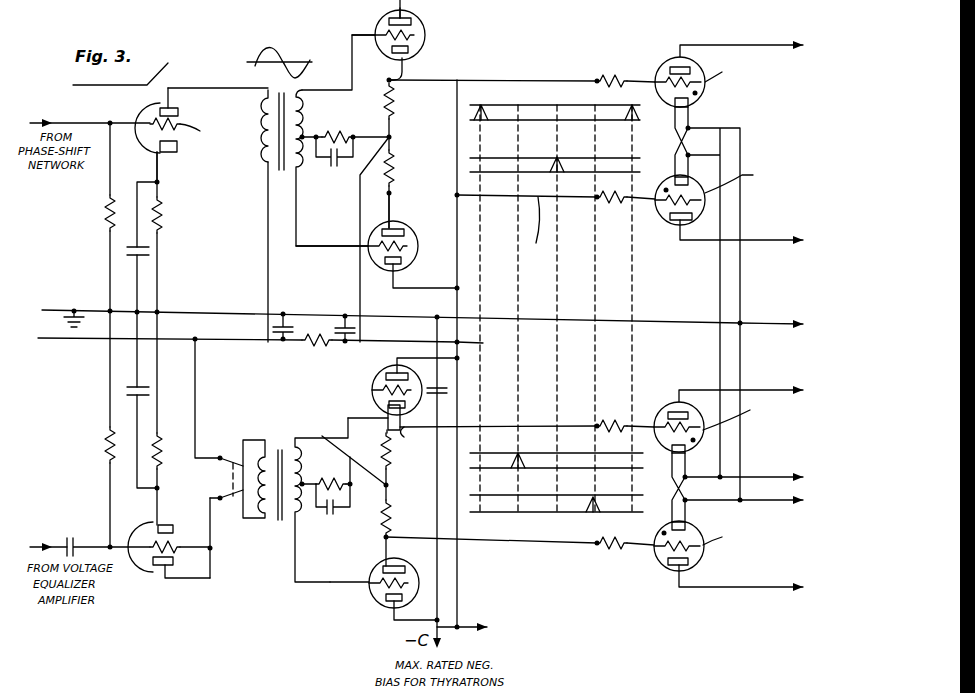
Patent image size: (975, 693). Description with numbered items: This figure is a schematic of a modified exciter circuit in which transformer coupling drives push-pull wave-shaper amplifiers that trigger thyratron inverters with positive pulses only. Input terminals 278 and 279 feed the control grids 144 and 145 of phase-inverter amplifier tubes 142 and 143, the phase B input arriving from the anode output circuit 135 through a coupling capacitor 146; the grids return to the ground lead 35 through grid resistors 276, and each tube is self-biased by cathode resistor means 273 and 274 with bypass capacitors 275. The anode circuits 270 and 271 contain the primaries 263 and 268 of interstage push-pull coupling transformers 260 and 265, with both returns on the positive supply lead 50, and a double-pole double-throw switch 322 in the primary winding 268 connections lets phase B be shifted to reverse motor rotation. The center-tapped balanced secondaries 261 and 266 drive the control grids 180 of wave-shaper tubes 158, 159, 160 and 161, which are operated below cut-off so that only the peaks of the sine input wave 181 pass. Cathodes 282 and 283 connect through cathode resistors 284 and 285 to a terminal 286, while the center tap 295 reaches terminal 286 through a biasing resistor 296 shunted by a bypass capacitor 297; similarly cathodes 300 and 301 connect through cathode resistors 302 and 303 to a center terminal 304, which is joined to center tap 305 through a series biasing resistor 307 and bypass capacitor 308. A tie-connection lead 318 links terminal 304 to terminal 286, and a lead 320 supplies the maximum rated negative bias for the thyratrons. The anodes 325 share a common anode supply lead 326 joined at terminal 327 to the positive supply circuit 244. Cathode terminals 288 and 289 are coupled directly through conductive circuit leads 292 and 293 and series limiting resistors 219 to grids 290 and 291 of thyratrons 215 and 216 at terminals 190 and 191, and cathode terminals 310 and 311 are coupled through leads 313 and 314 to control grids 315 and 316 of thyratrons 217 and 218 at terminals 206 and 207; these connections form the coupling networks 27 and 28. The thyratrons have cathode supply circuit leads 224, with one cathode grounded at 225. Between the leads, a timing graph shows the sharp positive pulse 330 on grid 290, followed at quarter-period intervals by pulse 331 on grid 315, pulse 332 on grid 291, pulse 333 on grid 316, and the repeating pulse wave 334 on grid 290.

The push-pull impedance coupling network 27 is at (506, 79).
The push-pull impedance coupling network 28 is at (508, 407).
The ground lead 35 is at (197, 310).
The positive anode supply lead 50 is at (228, 342).
The anode output circuit 135 is at (58, 538).
The electronic amplifier tube 142 is at (153, 112).
The electronic amplifier tube 143 is at (160, 524).
The control grid 144 is at (207, 133).
The control grid 145 is at (210, 557).
The coupling capacitor 146 is at (77, 538).
The wave-shaper tube 158 is at (425, 42).
The wave-shaper tube 159 is at (386, 272).
The wave-shaper tube 160 is at (376, 374).
The wave-shaper tube 161 is at (370, 571).
The control grid 180 is at (377, 32).
The sine input wave 181 is at (262, 56).
The terminal 190 is at (594, 79).
The terminal 191 is at (598, 199).
The terminal 206 is at (597, 425).
The terminal 207 is at (595, 547).
The thyratron inverter 215 is at (664, 63).
The thyratron inverter 216 is at (699, 176).
The thyratron inverter 217 is at (668, 400).
The thyratron inverter 218 is at (695, 528).
The series limiting resistor 219 is at (614, 77).
The cathode supply circuit lead 224 is at (708, 222).
The ground connection 225 is at (741, 322).
The positive potential supply circuit 244 is at (470, 623).
The interstage push-pull coupling transformer 260 is at (266, 174).
The center-tapped balanced secondary 261 is at (299, 95).
The primary winding 263 is at (262, 148).
The interstage push-pull coupling transformer 265 is at (283, 520).
The center-tapped balanced secondary 266 is at (294, 447).
The primary winding 268 is at (250, 440).
The anode circuit 270 is at (209, 87).
The anode circuit 271 is at (182, 580).
The cathode resistor 273 is at (165, 213).
The cathode resistor 274 is at (163, 450).
The bypass capacitor 275 is at (125, 250).
The grid resistor 276 is at (104, 214).
The input terminal 278 is at (110, 120).
The input terminal 279 is at (112, 550).
The cathode 282 is at (406, 65).
The cathode 283 is at (393, 228).
The cathode resistor 284 is at (388, 100).
The cathode resistor 285 is at (412, 173).
The terminal 286 is at (392, 136).
The cathode terminal 288 is at (352, 60).
The cathode terminal 289 is at (387, 195).
The grid 290 is at (729, 71).
The grid 291 is at (745, 180).
The conductive circuit lead 292 is at (522, 68).
The conductive circuit lead 293 is at (542, 231).
The center tap 295 is at (304, 133).
The biasing resistor 296 is at (335, 133).
The bypass capacitor 297 is at (333, 167).
The cathode 300 is at (419, 434).
The cathode 301 is at (357, 583).
The cathode resistor 302 is at (392, 452).
The cathode resistor 303 is at (383, 517).
The center terminal 304 is at (386, 485).
The center tap 305 is at (304, 480).
The series biasing resistor 307 is at (331, 480).
The bypass capacitor 308 is at (325, 514).
The cathode terminal 310 is at (348, 418).
The cathode terminal 311 is at (383, 539).
The lead 313 is at (507, 425).
The lead 314 is at (508, 543).
The control grid 315 is at (742, 416).
The control grid 316 is at (728, 536).
The tie-connection lead 318 is at (358, 273).
The lead 320 is at (448, 540).
The double-pole double-throw switch 322 is at (228, 445).
The anode 325 is at (413, 22).
The common anode supply lead 326 is at (457, 270).
The terminal 327 is at (487, 345).
The positive pulse 330 is at (488, 110).
The positive pulse 331 is at (523, 457).
The positive pulse 332 is at (545, 162).
The positive pulse 333 is at (599, 498).
The pulse wave 334 is at (624, 112).